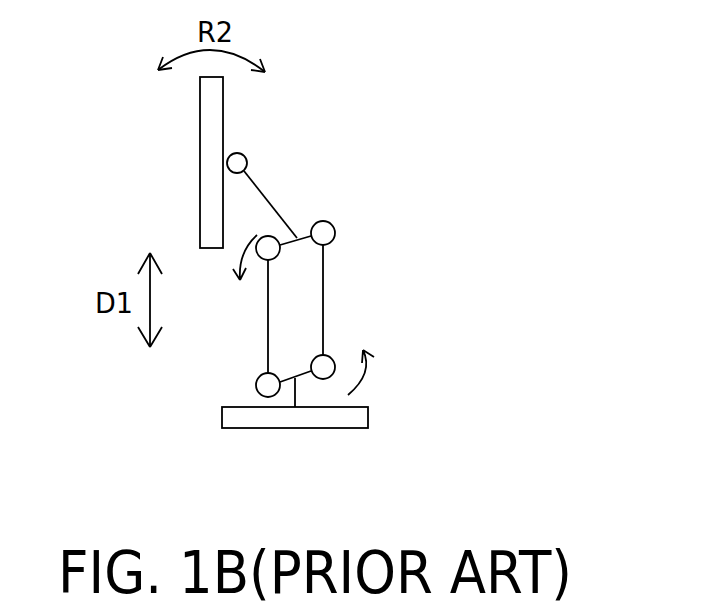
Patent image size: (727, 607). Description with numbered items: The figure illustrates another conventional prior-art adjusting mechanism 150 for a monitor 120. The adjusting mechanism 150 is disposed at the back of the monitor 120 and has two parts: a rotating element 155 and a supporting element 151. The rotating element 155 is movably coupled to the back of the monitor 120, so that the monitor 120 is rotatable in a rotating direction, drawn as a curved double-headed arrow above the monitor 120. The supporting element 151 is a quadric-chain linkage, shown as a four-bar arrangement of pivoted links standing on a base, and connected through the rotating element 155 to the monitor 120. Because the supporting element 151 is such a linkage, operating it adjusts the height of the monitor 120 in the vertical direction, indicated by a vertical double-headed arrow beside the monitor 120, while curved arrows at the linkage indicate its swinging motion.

The monitor 120 is at (202, 159).
The adjusting mechanism 150 is at (339, 273).
The supporting element 151 is at (273, 200).
The rotating element 155 is at (246, 156).